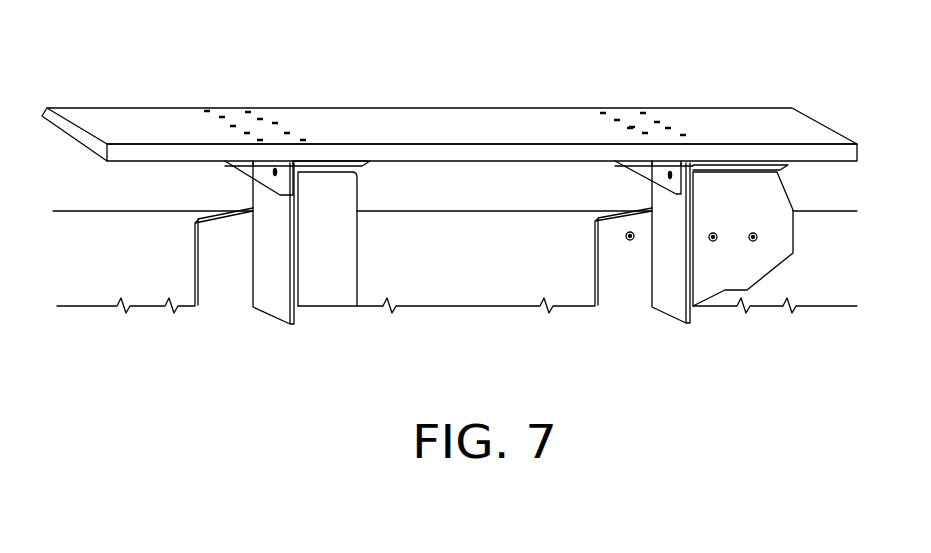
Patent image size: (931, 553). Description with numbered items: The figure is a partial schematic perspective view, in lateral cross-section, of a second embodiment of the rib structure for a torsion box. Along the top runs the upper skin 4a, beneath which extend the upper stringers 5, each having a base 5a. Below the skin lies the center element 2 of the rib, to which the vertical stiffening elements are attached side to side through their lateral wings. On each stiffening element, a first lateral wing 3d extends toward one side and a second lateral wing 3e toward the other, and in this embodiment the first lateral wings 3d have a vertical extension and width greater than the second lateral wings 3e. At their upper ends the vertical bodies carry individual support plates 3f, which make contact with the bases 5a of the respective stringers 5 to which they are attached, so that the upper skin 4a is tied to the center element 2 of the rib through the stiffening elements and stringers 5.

The center element of the rib 2 is at (123, 268).
The upper skin 4a is at (160, 138).
The upper stringers 5 is at (225, 165).
The base of the upper stringer 5a is at (307, 165).
The first lateral wing 3d is at (325, 285).
The second lateral wing 3e is at (217, 283).
The support plate 3f is at (370, 167).